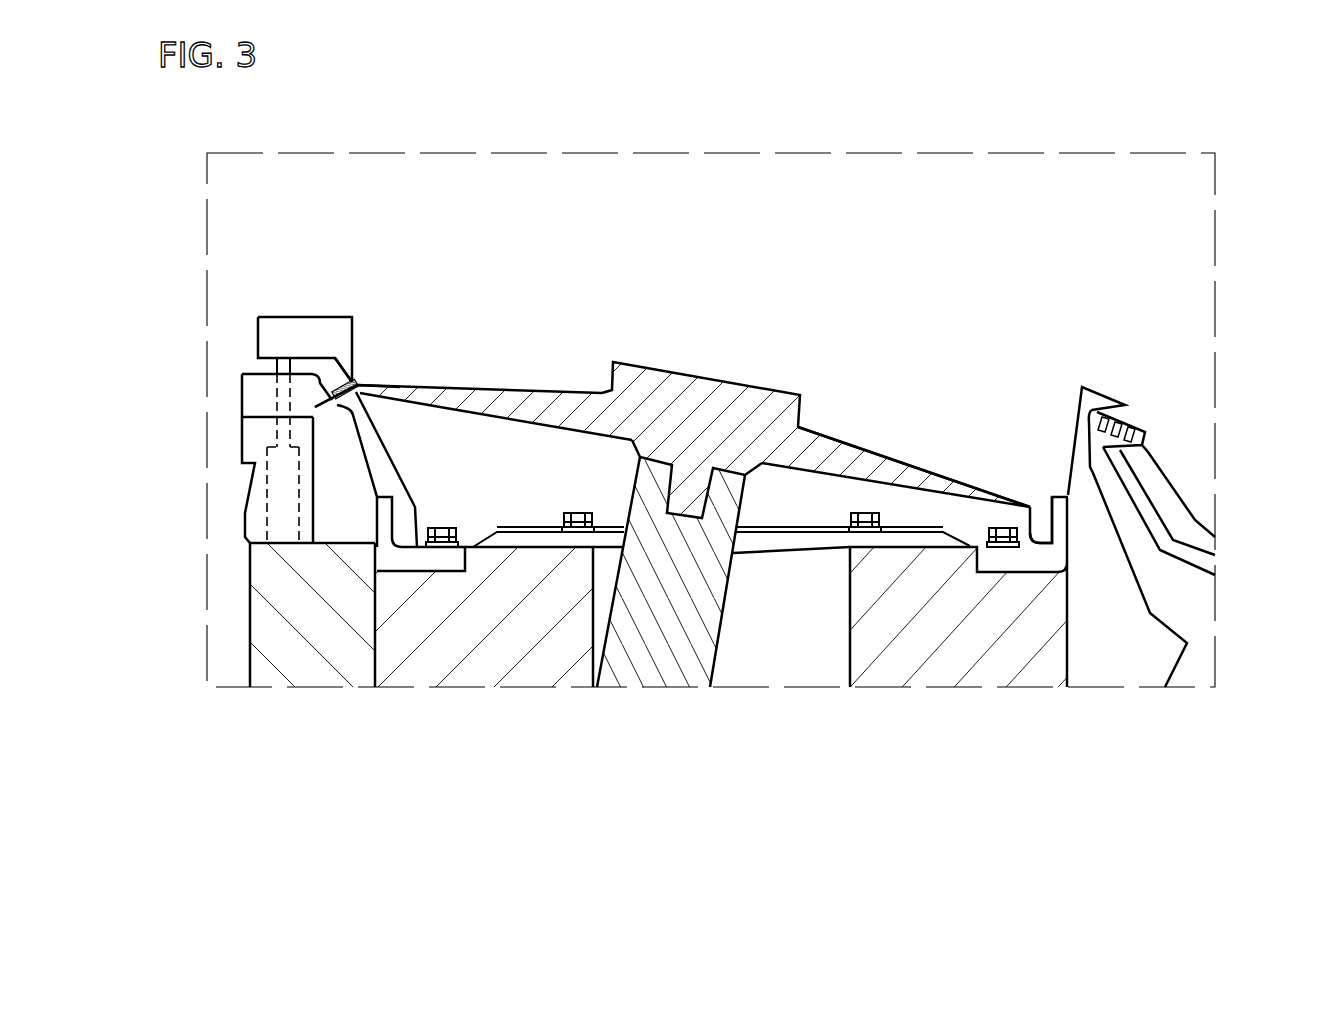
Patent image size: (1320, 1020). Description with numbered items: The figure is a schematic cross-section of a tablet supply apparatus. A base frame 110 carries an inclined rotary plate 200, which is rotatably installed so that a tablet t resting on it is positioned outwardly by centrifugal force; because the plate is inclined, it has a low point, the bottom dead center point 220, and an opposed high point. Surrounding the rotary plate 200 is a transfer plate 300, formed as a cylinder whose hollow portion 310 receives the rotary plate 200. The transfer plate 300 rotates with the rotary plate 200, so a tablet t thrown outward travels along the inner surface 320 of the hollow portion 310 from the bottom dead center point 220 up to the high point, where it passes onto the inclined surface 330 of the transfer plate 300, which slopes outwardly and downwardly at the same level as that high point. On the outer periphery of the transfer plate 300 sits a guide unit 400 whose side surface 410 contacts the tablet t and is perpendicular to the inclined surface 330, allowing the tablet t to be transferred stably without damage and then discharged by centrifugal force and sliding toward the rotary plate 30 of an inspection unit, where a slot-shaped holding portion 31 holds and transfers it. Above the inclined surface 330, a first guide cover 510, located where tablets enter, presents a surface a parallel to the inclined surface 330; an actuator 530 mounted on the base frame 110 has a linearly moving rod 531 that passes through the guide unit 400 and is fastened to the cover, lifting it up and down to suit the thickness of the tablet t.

The base frame 110 is at (266, 622).
The rotary plate 200 is at (708, 398).
The bottom dead center point 220 is at (1020, 470).
The transfer plate 300 is at (420, 462).
The hollow portion 310 is at (532, 463).
The inner surface 320 is at (1057, 477).
The inclined surface 330 is at (382, 467).
The guide unit 400 is at (255, 398).
The side surface 410 is at (320, 368).
The first guide cover 510 is at (277, 325).
The actuator 530 is at (268, 494).
The rod 531 is at (280, 432).
The holding portion 31 is at (1147, 427).
The rotary plate of inspection unit 30 is at (1180, 493).
The surface a is at (353, 383).
The tablet t is at (351, 382).